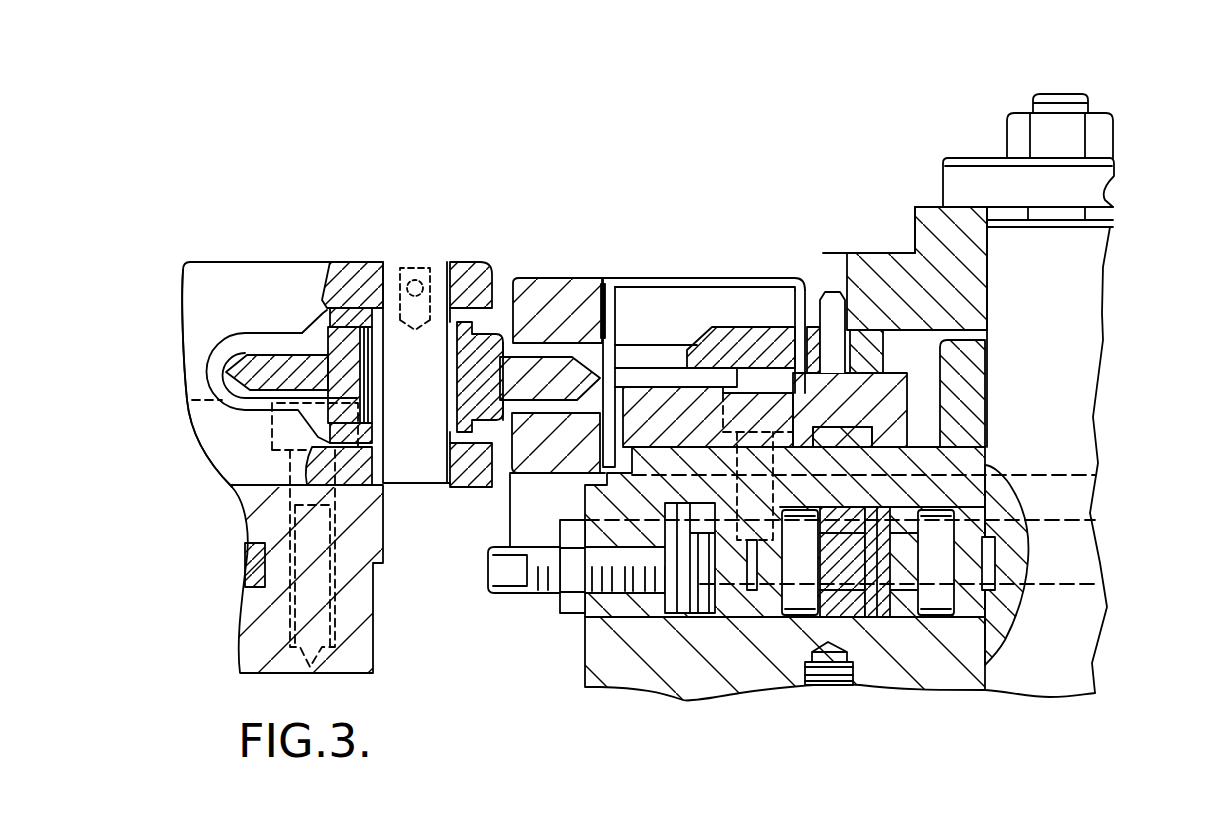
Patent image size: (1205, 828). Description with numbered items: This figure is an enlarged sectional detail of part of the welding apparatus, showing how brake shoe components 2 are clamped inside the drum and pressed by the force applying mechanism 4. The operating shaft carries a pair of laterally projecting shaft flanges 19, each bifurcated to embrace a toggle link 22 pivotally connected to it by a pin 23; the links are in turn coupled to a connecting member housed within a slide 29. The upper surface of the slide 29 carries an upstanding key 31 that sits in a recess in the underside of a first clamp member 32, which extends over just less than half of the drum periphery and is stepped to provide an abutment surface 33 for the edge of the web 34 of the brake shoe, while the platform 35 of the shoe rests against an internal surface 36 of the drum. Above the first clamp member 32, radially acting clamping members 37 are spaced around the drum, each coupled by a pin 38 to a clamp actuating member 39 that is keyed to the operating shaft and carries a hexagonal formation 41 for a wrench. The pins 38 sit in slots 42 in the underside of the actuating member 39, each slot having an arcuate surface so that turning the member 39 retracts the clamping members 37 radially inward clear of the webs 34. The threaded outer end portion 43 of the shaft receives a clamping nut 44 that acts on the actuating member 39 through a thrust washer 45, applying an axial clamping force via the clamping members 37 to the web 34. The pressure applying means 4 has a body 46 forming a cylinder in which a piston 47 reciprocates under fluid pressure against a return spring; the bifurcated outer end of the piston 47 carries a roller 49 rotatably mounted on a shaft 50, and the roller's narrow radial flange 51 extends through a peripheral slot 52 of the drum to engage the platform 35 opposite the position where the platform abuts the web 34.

The brake shoe components 2 is at (641, 357).
The force applying mechanism 4 is at (233, 509).
The shaft flanges 19 is at (900, 603).
The toggle links 22 is at (859, 600).
The pins 23 is at (938, 600).
The slide 29 is at (603, 503).
The upstanding key 31 is at (840, 443).
The first clamp member 32 is at (801, 393).
The abutment surface 33 is at (727, 385).
The web 34 is at (672, 380).
The platform 35 is at (605, 296).
The internal surface 36 is at (609, 318).
The clamping members 37 is at (897, 268).
The pin 38 is at (868, 342).
The clamp actuating member 39 is at (900, 253).
The hexagonal formation 41 is at (907, 253).
The slots 42 is at (830, 300).
The outer end portion 43 is at (1073, 100).
The clamping nut 44 is at (1097, 140).
The thrust washer 45 is at (1087, 183).
The body 46 is at (357, 535).
The piston 47 is at (241, 283).
The roller 49 is at (476, 340).
The shaft 50 is at (387, 307).
The radial flange 51 is at (508, 477).
The peripheral slot 52 is at (537, 352).